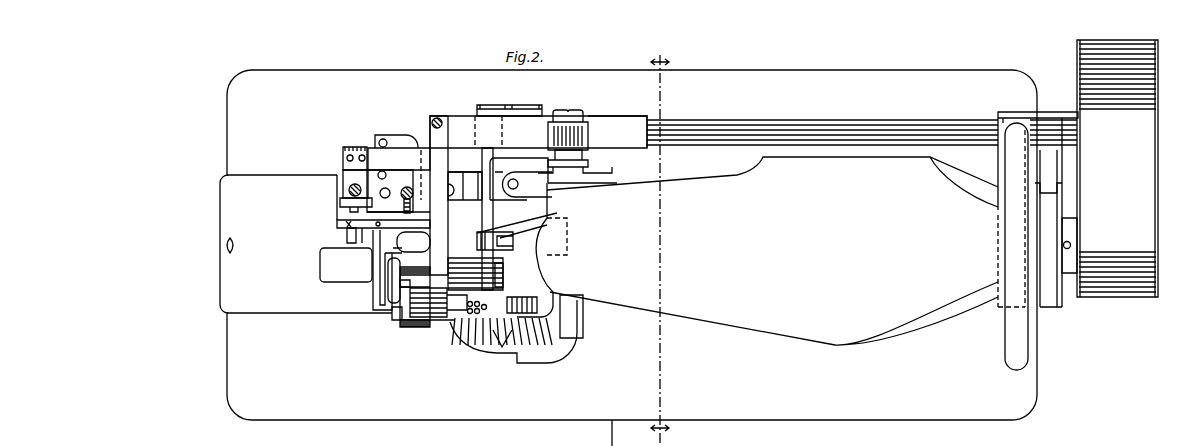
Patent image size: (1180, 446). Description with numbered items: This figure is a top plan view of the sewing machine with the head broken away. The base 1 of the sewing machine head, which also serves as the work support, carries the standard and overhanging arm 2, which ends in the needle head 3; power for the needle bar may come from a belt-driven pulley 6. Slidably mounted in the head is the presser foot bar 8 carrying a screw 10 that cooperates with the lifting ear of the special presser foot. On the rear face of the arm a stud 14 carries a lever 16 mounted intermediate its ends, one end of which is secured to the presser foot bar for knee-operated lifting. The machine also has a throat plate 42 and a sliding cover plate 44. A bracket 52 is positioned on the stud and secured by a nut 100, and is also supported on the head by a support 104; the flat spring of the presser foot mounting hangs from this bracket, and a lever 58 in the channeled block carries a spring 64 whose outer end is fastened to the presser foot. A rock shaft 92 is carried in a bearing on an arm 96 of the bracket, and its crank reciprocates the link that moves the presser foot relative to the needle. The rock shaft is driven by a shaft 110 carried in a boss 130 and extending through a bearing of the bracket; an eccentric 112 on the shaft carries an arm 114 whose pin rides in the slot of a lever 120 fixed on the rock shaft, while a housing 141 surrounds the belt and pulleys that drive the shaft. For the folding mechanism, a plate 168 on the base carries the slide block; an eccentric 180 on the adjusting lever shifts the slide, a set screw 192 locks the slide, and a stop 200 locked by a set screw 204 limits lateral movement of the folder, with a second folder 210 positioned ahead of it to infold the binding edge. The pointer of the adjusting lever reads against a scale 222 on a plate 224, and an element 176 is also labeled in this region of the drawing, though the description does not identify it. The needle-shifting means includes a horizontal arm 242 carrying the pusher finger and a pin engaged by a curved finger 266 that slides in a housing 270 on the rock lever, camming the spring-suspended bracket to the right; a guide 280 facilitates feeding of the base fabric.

The base 1 is at (628, 423).
The overhanging arm 2 is at (703, 312).
The needle head 3 is at (660, 242).
The pulley 6 is at (1050, 298).
The presser foot bar 8 is at (348, 189).
The screw 10 is at (352, 208).
The stud 14 is at (597, 183).
The lever 16 is at (605, 169).
The throat plate 42 is at (357, 311).
The sliding cover plate 44 is at (220, 265).
The bracket 52 is at (612, 118).
The lever 58 is at (421, 152).
The spring 64 is at (352, 148).
The rock shaft 92 is at (415, 320).
The arm 96 is at (443, 240).
The nut 100 is at (566, 116).
The support 104 is at (441, 121).
The shaft 110 is at (835, 130).
The eccentric 112 is at (487, 106).
The arm 114 is at (481, 218).
The lever 120 is at (498, 265).
The boss 130 is at (1000, 157).
The housing 141 is at (1126, 292).
The plate 168 is at (388, 141).
The head 176 is at (580, 322).
The eccentric 180 is at (518, 184).
The set screw 192 is at (1000, 293).
The stop 200 is at (398, 214).
The set screw 204 is at (406, 192).
The folder 210 is at (557, 213).
The scale 222 is at (457, 310).
The plate 224 is at (483, 348).
The horizontal arm 242 is at (342, 225).
The finger 266 is at (374, 290).
The housing 270 is at (440, 288).
The guide 280 is at (322, 265).